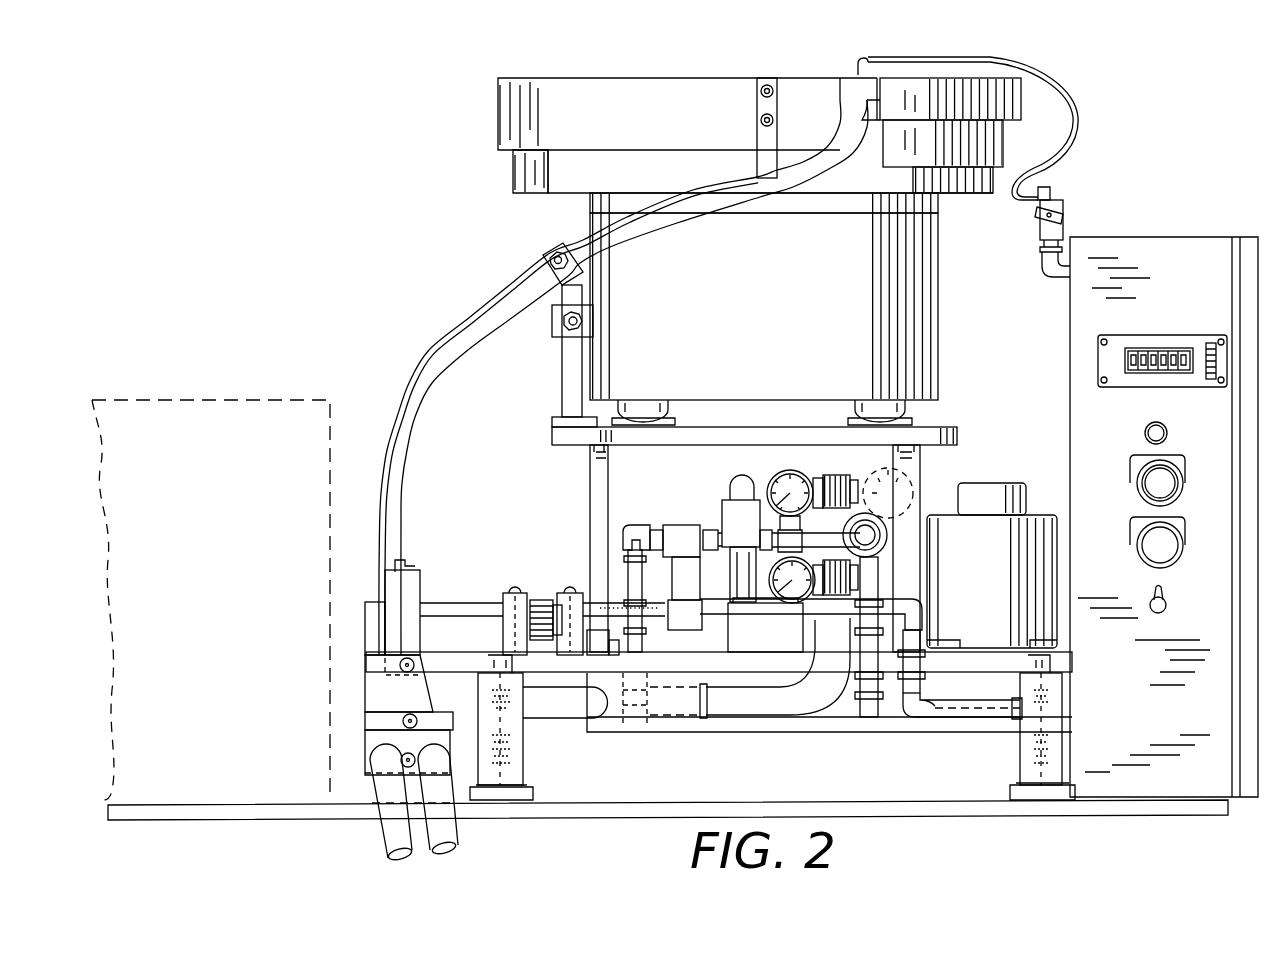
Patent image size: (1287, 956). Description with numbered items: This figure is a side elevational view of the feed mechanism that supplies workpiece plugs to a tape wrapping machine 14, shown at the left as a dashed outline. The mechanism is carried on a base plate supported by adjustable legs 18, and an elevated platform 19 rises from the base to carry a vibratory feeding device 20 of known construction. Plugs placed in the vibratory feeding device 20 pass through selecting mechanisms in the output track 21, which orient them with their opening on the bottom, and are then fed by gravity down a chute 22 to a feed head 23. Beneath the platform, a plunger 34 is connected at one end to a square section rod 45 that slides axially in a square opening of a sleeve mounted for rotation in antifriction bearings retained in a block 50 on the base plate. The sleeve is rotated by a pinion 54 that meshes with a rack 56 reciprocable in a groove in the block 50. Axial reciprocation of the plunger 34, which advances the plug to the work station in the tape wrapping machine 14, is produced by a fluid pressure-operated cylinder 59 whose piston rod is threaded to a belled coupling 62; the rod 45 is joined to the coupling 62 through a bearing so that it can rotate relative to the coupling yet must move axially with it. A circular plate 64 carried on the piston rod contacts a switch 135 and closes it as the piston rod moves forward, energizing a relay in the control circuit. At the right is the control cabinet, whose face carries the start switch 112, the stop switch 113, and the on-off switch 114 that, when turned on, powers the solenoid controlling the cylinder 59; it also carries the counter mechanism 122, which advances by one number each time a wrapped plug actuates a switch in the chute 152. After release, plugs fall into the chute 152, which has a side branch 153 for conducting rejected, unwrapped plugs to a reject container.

The tape wrapping machine 14 is at (203, 400).
The adjustable legs 18 is at (522, 740).
The elevated platform 19 is at (943, 427).
The vibratory feeding device 20 is at (778, 313).
The output track 21 is at (1018, 68).
The chute 22 is at (431, 347).
The feed head 23 is at (414, 592).
The plunger 34 is at (456, 603).
The square section rod 45 is at (655, 600).
The block 50 is at (506, 600).
The pinion 54 is at (540, 600).
The rack 56 is at (535, 633).
The fluid pressure-operated cylinder 59 is at (843, 615).
The belled coupling 62 is at (650, 622).
The circular plate 64 is at (702, 585).
The start switch 112 is at (1160, 483).
The stop switch 113 is at (1165, 553).
The on-off switch 114 is at (1167, 605).
The counter mechanism 122 is at (1148, 335).
The switch 135 is at (593, 630).
The chute 152 is at (384, 835).
The side branch 153 is at (460, 835).